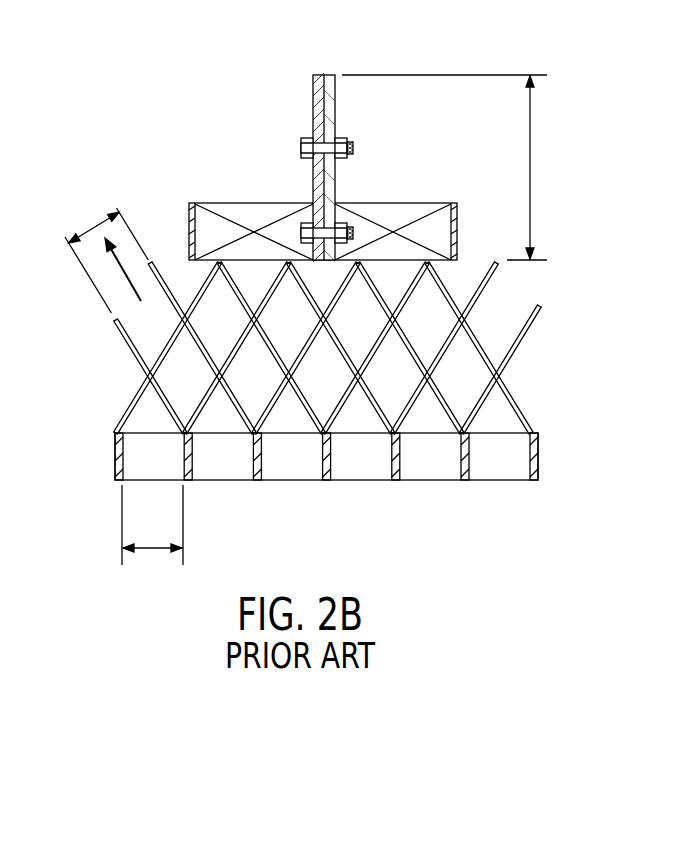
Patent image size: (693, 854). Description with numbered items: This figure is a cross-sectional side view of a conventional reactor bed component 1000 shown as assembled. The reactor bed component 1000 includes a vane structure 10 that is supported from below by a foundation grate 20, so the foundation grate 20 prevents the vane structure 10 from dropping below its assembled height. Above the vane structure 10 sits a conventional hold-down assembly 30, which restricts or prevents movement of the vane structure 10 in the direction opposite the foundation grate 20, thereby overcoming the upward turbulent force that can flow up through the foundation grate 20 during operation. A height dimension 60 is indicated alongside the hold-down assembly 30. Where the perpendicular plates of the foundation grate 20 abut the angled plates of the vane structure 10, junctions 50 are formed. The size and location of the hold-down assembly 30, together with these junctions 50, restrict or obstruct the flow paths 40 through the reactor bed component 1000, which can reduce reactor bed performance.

The reactor bed component 1000 is at (572, 139).
The hold-down assembly 30 is at (243, 98).
The height dimension 60 is at (529, 158).
The vane structure 10 is at (567, 357).
The foundation grate 20 is at (566, 464).
The junctions 50 is at (178, 430).
The flow paths 40 is at (93, 235).